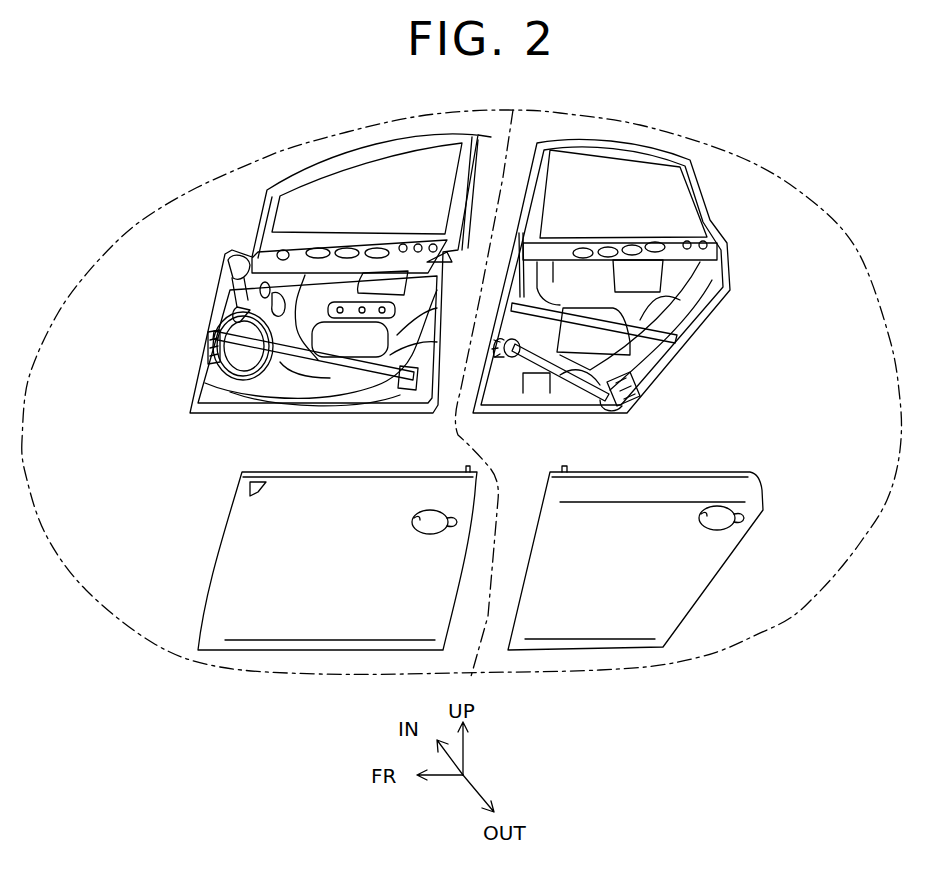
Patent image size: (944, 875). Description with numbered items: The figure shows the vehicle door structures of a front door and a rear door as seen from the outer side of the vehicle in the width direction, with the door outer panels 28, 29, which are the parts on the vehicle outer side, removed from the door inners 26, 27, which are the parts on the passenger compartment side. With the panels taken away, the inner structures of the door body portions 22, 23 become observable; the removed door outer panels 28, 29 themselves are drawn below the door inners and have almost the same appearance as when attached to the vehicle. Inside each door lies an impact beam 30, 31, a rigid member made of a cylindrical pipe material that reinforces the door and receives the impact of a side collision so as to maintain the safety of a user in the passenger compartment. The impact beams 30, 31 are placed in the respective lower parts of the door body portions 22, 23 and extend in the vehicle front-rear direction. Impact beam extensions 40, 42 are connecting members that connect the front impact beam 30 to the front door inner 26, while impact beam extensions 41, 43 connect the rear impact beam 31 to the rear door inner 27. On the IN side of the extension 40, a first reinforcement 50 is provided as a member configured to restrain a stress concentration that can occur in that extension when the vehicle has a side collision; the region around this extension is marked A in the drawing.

The door body portion 22 is at (121, 438).
The door body portion 23 is at (816, 375).
The door inner 26 is at (196, 370).
The door inner 27 is at (690, 353).
The door outer panel 28 is at (215, 555).
The door outer panel 29 is at (762, 488).
The impact beam 30 is at (287, 358).
The impact beam 31 is at (570, 378).
The impact beam extension 40 is at (220, 332).
The first reinforcement 50 is at (244, 346).
The impact beam extension 41 is at (510, 383).
The impact beam extension 42 is at (408, 392).
The impact beam extension 43 is at (633, 398).
The region A is at (196, 338).